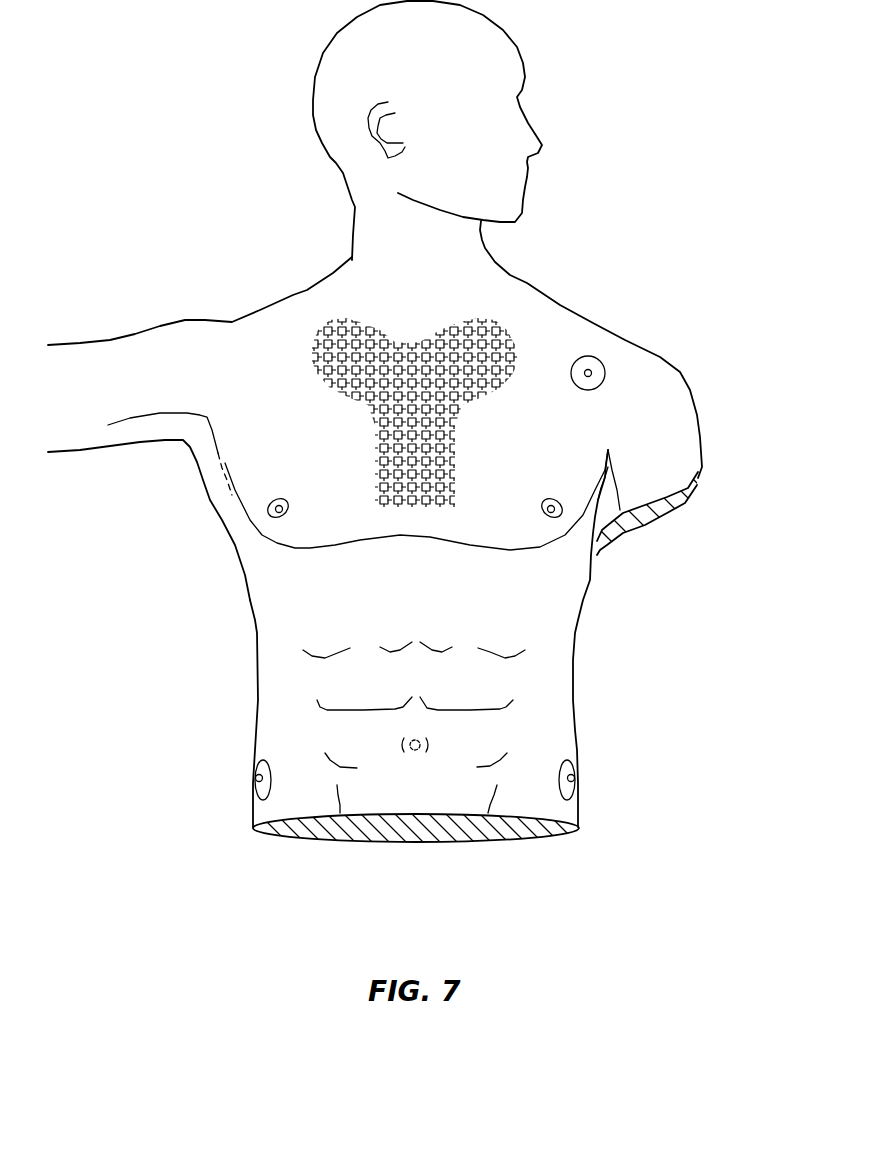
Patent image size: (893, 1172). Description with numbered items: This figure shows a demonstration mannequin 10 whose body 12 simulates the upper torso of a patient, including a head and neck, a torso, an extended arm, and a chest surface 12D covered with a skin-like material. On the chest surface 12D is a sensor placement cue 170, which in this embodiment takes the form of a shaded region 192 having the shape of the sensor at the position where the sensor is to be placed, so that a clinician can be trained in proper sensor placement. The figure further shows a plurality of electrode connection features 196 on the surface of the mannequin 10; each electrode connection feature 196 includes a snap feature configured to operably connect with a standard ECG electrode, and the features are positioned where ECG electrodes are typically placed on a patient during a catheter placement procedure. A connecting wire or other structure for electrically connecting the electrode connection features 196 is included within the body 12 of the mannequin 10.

The demonstration mannequin 10 is at (375, 407).
The body 12 is at (497, 532).
The chest surface 12D is at (541, 479).
The sensor placement cue 170 is at (314, 531).
The shaded region 192 is at (548, 412).
The electrode connection feature 196 is at (427, 601).